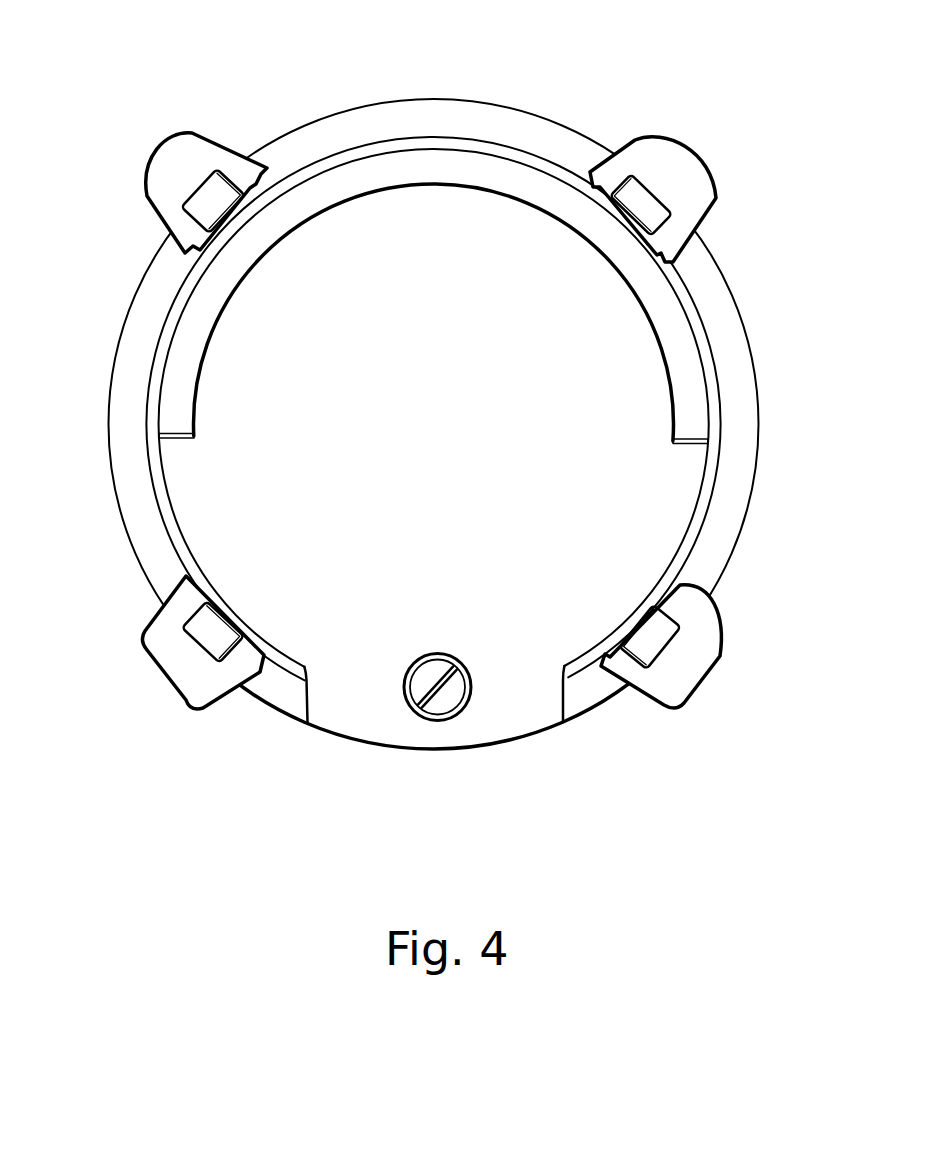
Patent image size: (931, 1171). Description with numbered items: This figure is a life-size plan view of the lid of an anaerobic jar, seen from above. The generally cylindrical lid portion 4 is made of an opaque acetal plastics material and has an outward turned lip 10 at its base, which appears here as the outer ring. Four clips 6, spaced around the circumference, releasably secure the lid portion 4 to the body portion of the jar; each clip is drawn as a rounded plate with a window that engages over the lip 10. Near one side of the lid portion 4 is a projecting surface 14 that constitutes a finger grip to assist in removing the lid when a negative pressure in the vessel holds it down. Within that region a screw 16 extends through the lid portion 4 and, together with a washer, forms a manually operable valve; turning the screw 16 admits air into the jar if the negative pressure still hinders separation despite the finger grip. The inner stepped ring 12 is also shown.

The lid portion 4 is at (578, 478).
The clips 6 is at (202, 155).
The outward turned lip 10 is at (447, 112).
The inner flange 12 is at (183, 338).
The projecting surface 14 is at (523, 727).
The screw 16 is at (438, 702).